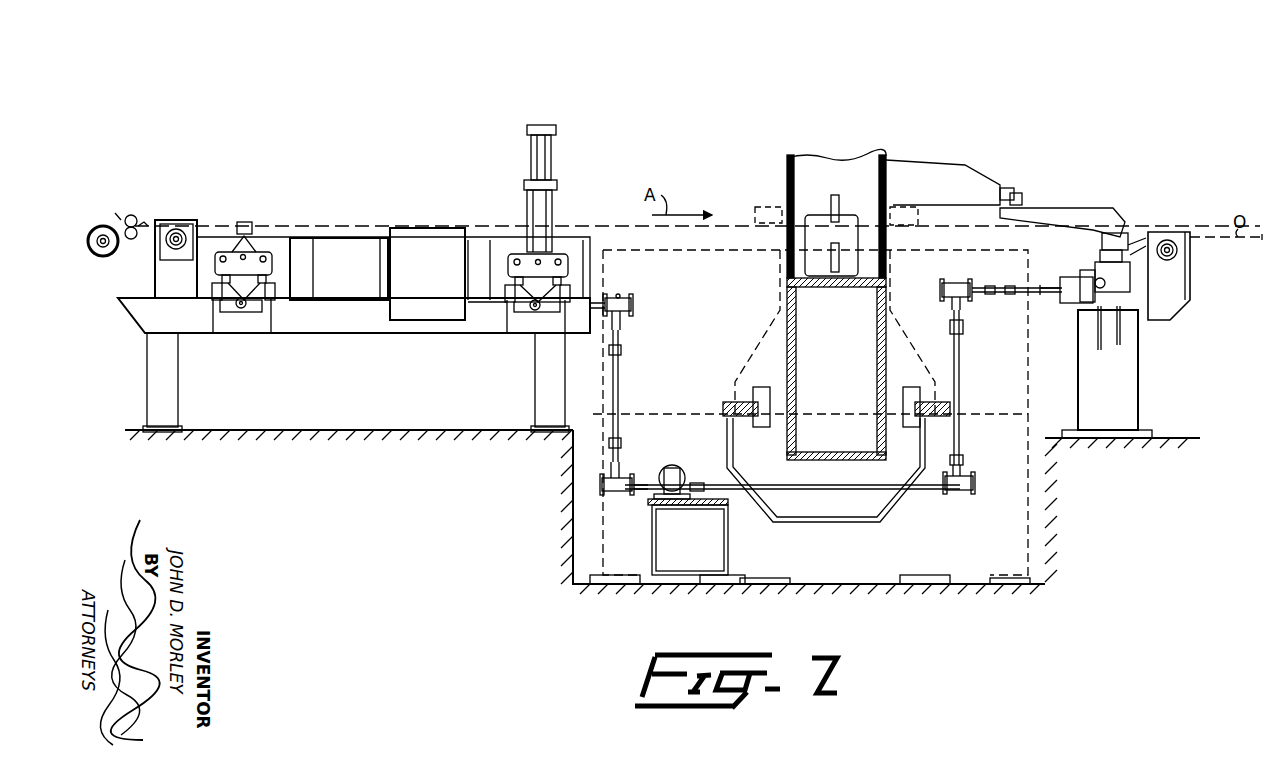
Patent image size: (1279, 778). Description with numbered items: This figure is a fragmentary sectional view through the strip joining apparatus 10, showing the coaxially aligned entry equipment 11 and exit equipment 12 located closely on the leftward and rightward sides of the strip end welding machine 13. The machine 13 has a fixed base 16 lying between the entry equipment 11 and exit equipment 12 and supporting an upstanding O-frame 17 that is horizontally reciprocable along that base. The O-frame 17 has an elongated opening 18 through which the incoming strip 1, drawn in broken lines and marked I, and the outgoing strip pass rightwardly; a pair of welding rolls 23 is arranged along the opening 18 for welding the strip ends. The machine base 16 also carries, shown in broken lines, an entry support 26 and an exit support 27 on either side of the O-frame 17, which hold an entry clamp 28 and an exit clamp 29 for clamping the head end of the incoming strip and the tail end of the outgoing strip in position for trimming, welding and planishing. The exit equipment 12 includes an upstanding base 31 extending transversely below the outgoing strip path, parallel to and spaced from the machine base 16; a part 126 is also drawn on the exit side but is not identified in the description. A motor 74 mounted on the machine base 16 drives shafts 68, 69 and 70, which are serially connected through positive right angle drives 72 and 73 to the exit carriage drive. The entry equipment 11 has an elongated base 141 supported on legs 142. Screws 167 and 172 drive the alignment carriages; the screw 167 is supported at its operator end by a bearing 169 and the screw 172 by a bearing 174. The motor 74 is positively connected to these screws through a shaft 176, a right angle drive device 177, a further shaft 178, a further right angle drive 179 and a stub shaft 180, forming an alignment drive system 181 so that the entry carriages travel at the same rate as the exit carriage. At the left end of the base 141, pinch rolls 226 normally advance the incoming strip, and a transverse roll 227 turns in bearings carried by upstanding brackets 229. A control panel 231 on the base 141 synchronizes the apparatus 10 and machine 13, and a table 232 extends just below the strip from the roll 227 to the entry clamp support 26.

The apparatus 10 is at (354, 43).
The entry equipment 11 is at (397, 446).
The exit equipment 12 is at (1198, 440).
The strip end welding machine 13 is at (835, 62).
The fixed base 16 is at (858, 565).
The O-frame 17 is at (890, 172).
The elongated opening 18 is at (895, 236).
The welding rolls 23 is at (840, 231).
The entry support 26 is at (810, 412).
The exit support 27 is at (949, 332).
The entry clamp 28 is at (758, 207).
The exit clamp 29 is at (898, 214).
The upstanding base 31 is at (1127, 391).
The shaft 68 is at (990, 290).
The shaft 69 is at (952, 348).
The shaft 70 is at (800, 487).
The right angle drive 72 is at (961, 282).
The right angle drive 73 is at (973, 485).
The motor 74 is at (669, 471).
The drive housing 126 is at (1178, 252).
The base 141 is at (353, 326).
The legs 142 is at (160, 380).
The screw 167 is at (240, 310).
The bearing 169 is at (222, 300).
The screw 172 is at (532, 310).
The bearing 174 is at (527, 308).
The shaft 176 is at (601, 303).
The right angle drive device 177 is at (632, 298).
The further shaft 178 is at (625, 365).
The further right angle drive 179 is at (626, 492).
The stub shaft 180 is at (644, 490).
The alignment drive system 181 is at (553, 486).
The pinch rolls 226 is at (120, 212).
The roll 227 is at (170, 249).
The upstanding brackets 229 is at (165, 278).
The control panel 231 is at (433, 306).
The table 232 is at (266, 238).
The incoming strip 1 is at (385, 225).